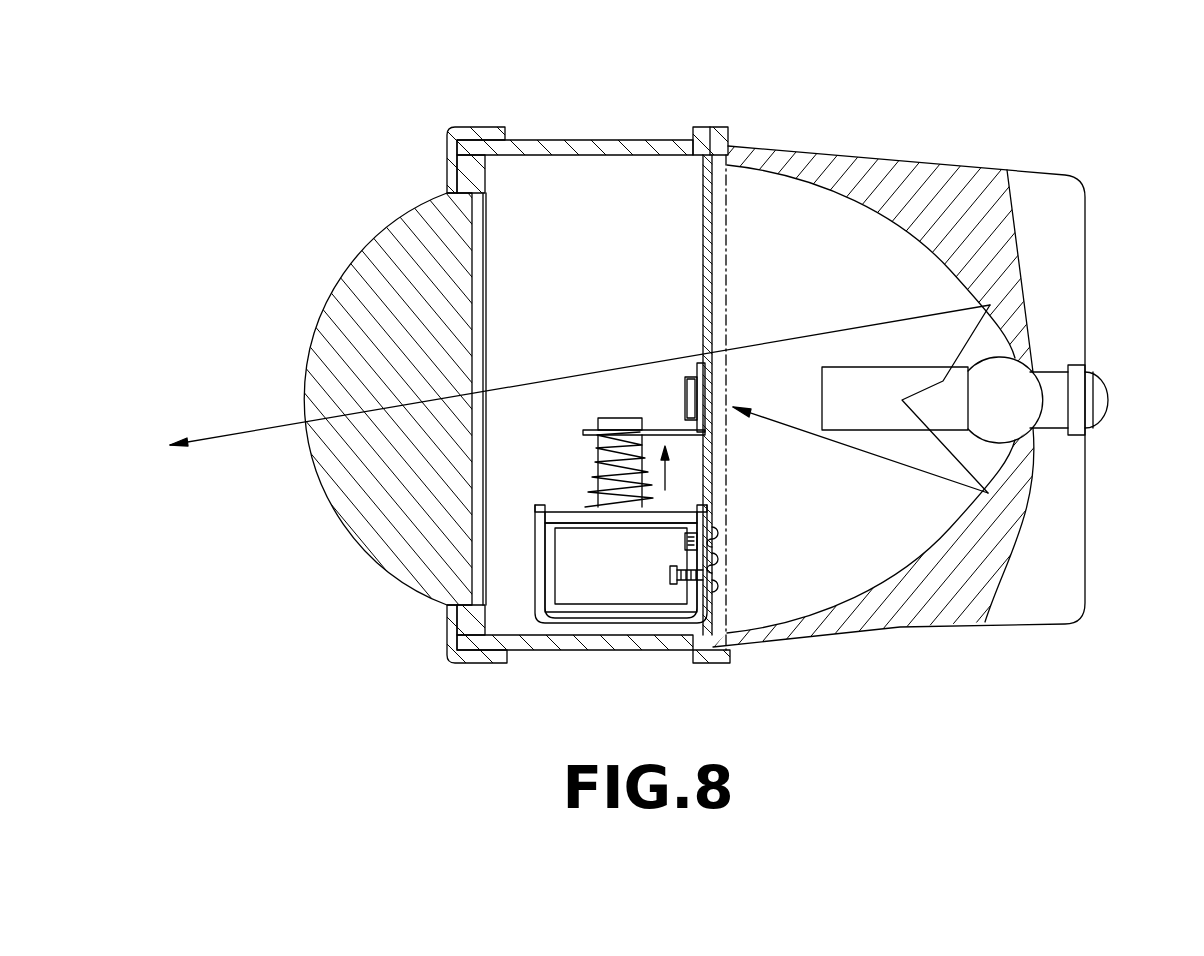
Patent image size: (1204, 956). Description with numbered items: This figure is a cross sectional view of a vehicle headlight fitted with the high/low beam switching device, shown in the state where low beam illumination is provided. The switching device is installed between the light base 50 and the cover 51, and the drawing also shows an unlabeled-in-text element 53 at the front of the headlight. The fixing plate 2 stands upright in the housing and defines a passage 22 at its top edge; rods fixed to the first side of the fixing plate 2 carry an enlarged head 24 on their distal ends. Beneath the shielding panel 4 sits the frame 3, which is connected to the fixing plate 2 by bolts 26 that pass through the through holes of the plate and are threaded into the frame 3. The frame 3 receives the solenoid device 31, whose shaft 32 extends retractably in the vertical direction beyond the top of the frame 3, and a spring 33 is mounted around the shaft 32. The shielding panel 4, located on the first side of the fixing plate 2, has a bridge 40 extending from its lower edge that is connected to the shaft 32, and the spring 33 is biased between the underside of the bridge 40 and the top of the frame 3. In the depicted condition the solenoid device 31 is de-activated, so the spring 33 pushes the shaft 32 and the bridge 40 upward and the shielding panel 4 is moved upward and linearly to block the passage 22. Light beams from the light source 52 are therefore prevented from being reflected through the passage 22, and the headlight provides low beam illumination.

The fixing plate 2 is at (707, 393).
The passage 22 is at (717, 463).
The enlarged head 24 is at (687, 393).
The bolts 26 is at (720, 570).
The frame 3 is at (530, 572).
The solenoid device 31 is at (576, 593).
The shaft 32 is at (540, 503).
The spring 33 is at (600, 467).
The shielding panel 4 is at (686, 446).
The bridge 40 is at (583, 431).
The light base 50 is at (928, 168).
The cover 51 is at (592, 140).
The light source 52 is at (942, 380).
The lens 53 is at (380, 237).